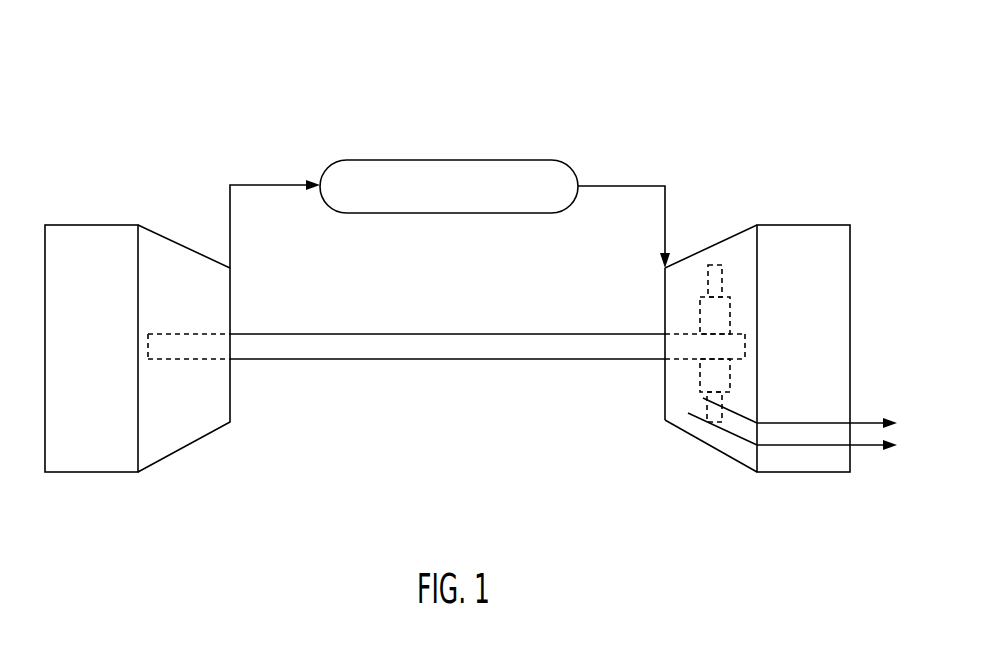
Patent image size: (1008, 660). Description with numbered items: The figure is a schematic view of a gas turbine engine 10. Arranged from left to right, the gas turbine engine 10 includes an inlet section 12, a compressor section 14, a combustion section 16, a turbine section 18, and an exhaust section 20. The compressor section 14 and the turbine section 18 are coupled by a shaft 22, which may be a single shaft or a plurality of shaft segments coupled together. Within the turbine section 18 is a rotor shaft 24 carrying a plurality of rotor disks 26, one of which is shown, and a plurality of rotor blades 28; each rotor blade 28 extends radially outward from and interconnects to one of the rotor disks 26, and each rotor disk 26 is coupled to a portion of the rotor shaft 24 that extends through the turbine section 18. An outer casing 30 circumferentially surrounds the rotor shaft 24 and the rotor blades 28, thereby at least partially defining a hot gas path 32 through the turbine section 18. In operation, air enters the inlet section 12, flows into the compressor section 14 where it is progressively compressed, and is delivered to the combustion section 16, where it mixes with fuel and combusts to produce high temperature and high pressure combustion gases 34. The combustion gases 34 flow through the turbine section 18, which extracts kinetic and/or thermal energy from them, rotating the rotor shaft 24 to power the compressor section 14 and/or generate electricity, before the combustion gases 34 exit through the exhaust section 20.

The gas turbine engine 10 is at (284, 94).
The inlet section 12 is at (93, 225).
The compressor section 14 is at (170, 240).
The combustion section 16 is at (510, 160).
The turbine section 18 is at (740, 232).
The exhaust section 20 is at (820, 225).
The shaft 22 is at (400, 360).
The rotor shaft 24 is at (745, 335).
The rotor disk 26 is at (700, 315).
The rotor blade 28 is at (702, 280).
The outer casing 30 is at (730, 460).
The hot gas path 32 is at (710, 425).
The combustion gases 34 is at (640, 188).